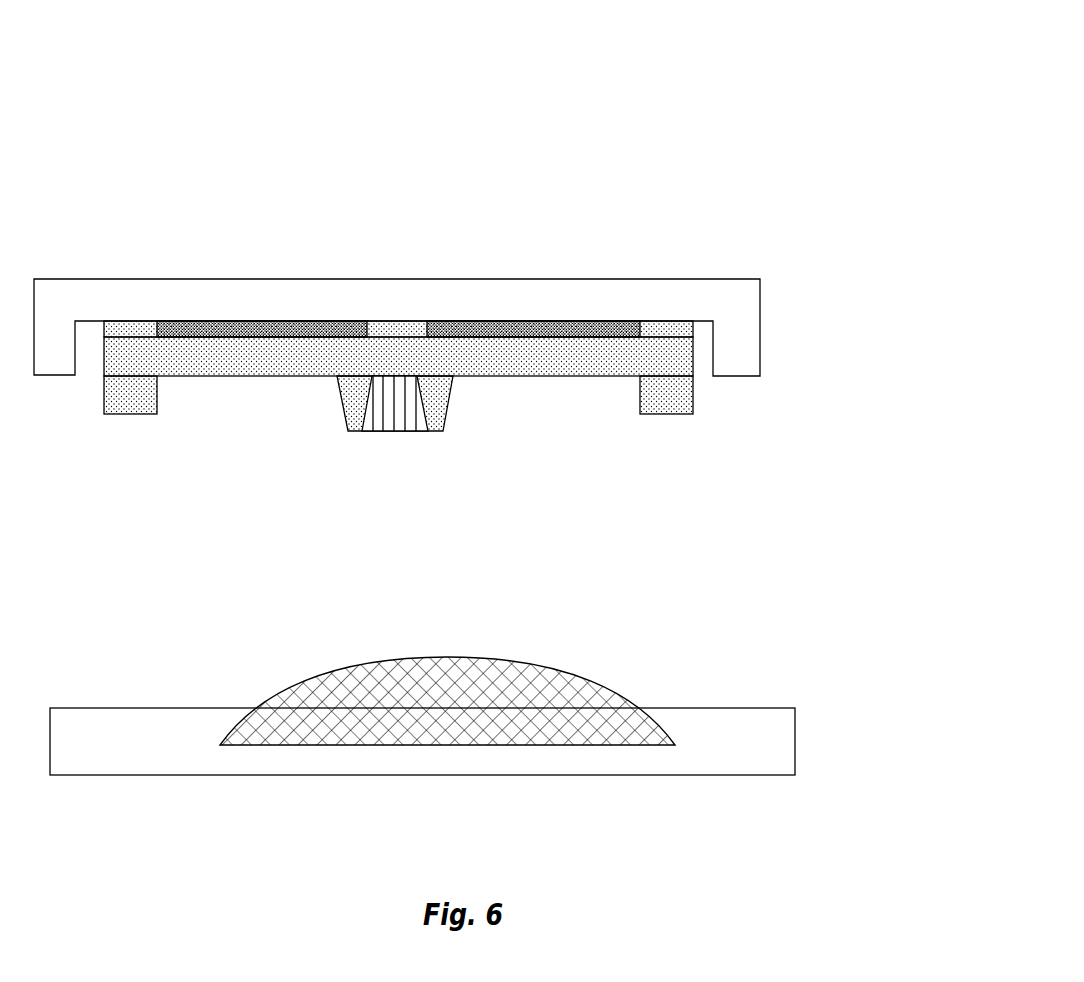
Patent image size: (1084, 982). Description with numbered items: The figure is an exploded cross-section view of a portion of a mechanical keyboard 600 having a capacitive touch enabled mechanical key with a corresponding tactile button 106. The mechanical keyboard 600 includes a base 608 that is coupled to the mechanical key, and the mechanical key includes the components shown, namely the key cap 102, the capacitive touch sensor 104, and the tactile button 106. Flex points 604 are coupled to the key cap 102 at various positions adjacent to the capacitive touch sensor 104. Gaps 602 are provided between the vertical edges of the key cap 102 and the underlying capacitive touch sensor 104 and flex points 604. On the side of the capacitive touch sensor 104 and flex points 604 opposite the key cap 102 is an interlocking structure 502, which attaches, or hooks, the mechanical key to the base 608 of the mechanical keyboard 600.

The mechanical keyboard 600 is at (651, 82).
The key cap 102 is at (774, 319).
The flex points 604 is at (672, 347).
The capacitive touch sensor 104 is at (579, 347).
The interlocking structure 502 is at (167, 409).
The gaps 602 is at (88, 356).
The base 608 is at (809, 730).
The tactile button 106 is at (594, 667).